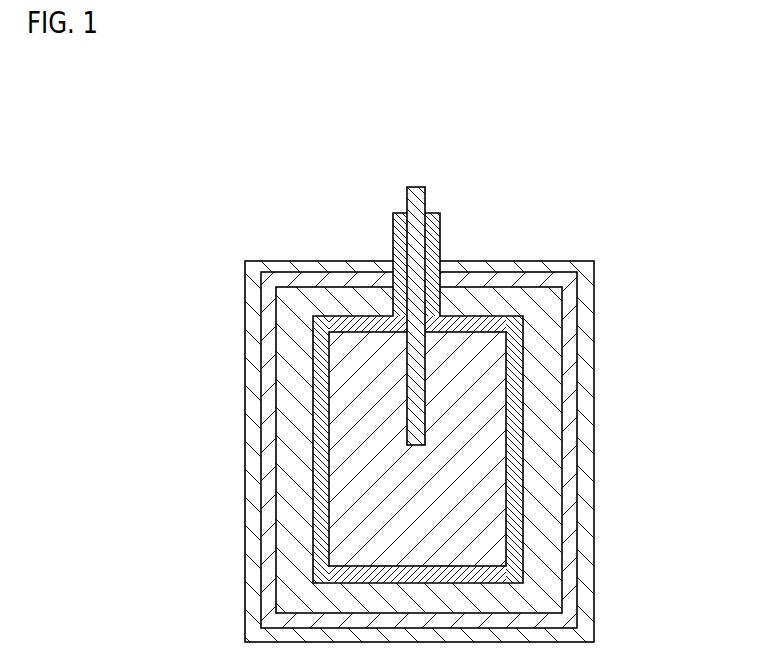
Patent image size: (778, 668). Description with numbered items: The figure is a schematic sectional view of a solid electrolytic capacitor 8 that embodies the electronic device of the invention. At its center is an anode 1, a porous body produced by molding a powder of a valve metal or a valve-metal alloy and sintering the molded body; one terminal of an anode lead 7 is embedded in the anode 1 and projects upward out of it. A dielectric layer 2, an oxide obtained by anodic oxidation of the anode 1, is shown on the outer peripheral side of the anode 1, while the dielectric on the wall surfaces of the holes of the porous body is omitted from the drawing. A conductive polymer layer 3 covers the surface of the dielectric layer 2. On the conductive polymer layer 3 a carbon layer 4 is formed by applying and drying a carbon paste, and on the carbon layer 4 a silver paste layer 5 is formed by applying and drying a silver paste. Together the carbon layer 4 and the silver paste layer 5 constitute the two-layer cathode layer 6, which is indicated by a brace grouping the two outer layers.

The anode 1 is at (485, 365).
The dielectric layer 2 is at (523, 405).
The conductive polymer layer 3 is at (545, 455).
The carbon layer 4 is at (573, 510).
The silver paste layer 5 is at (585, 565).
The cathode layer 6 is at (473, 451).
The anode lead 7 is at (412, 200).
The solid electrolytic capacitor 8 is at (473, 378).